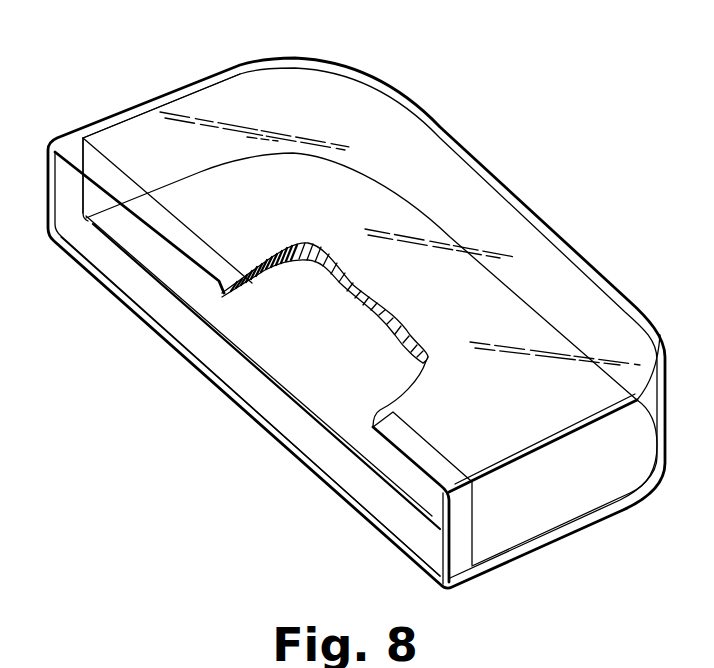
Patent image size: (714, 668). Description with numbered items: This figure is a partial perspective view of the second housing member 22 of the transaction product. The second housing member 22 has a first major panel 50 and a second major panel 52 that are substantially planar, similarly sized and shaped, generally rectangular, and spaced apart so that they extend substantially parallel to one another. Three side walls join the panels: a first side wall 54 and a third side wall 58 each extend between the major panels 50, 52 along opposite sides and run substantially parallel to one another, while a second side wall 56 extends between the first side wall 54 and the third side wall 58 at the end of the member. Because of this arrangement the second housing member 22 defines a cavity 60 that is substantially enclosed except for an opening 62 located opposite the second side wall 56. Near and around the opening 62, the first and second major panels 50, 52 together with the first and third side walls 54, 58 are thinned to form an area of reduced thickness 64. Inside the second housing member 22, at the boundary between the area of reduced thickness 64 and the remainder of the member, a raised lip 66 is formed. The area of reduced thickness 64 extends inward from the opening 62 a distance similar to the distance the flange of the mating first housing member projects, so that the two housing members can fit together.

The second housing member 22 is at (545, 147).
The first major panel 50 is at (302, 105).
The second major panel 52 is at (272, 338).
The first side wall 54 is at (547, 477).
The second side wall 56 is at (612, 270).
The third side wall 58 is at (141, 106).
The cavity 60 is at (201, 303).
The opening 62 is at (300, 392).
The area of reduced thickness 64 is at (382, 508).
The raised lip 66 is at (113, 247).